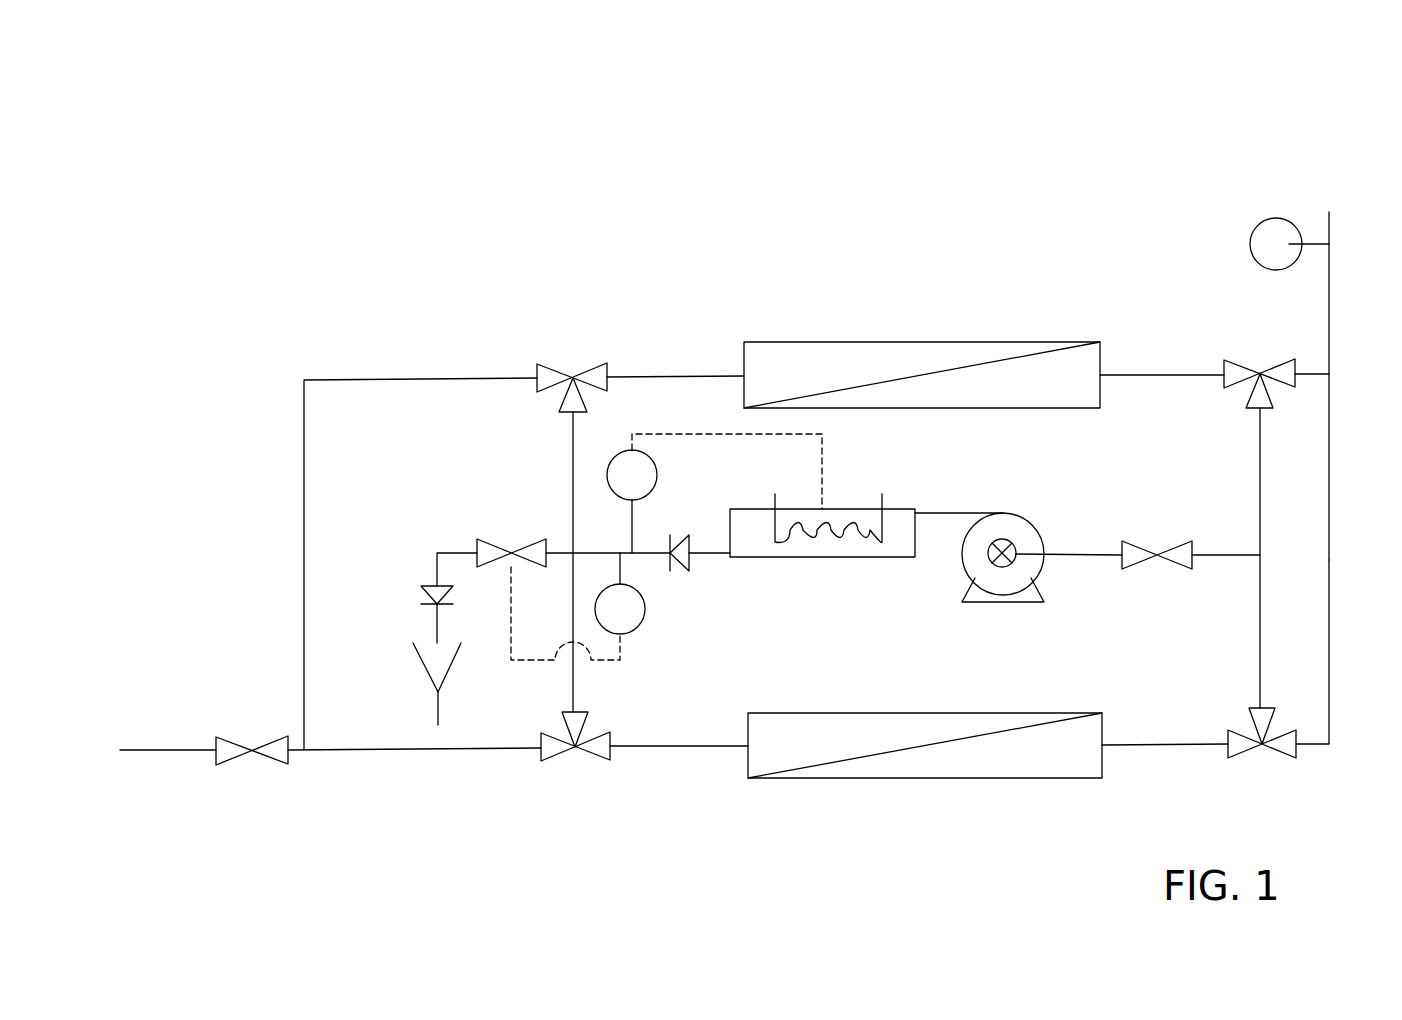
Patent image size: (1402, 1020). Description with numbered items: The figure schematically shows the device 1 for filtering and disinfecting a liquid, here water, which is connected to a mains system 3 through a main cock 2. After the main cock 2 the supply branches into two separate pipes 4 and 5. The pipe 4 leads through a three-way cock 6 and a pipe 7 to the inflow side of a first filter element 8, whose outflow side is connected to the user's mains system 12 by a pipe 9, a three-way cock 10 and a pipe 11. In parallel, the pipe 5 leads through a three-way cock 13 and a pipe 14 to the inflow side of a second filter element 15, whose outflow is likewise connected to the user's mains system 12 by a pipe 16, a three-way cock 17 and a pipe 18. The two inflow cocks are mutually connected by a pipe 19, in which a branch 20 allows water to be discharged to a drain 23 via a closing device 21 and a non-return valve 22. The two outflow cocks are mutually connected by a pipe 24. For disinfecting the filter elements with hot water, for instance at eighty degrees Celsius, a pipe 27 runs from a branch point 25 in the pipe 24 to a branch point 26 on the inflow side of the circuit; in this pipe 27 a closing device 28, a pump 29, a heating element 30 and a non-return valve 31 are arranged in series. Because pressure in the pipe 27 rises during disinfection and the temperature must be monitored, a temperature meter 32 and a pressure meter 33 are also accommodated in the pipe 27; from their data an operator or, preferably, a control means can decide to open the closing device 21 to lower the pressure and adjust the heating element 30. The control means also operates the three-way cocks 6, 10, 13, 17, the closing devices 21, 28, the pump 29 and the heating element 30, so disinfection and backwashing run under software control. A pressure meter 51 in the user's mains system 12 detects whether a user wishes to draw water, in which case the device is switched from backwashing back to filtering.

The device 1 is at (640, 243).
The main cock 2 is at (238, 740).
The mains system 3 is at (144, 750).
The pipe 4 is at (375, 750).
The pipe 5 is at (305, 488).
The three-way cock 6 is at (583, 757).
The pipe 7 is at (657, 746).
The first filter element 8 is at (897, 713).
The pipe 9 is at (1168, 744).
The three-way cock 10 is at (1283, 757).
The pipe 11 is at (1330, 558).
The user's mains system 12 is at (1330, 330).
The three-way cock 13 is at (578, 364).
The pipe 14 is at (668, 376).
The second filter element 15 is at (882, 342).
The pipe 16 is at (1148, 375).
The three-way cock 17 is at (1235, 360).
The pipe 18 is at (1300, 373).
The pipe 19 is at (572, 445).
The branch 20 is at (548, 550).
The closing device 21 is at (487, 542).
The non-return valve 22 is at (425, 588).
The drain 23 is at (453, 662).
The pipe 24 is at (1262, 497).
The connecting line 25 is at (1260, 555).
The branch point 26 is at (596, 553).
The pipe 27 is at (1068, 553).
The closing device 28 is at (1145, 540).
The pump 29 is at (1007, 512).
The heating element 30 is at (860, 557).
The non-return valve 31 is at (683, 570).
The temperature meter 32 is at (660, 472).
The pressure meter 33 is at (644, 626).
The pressure meter 51 is at (1258, 228).